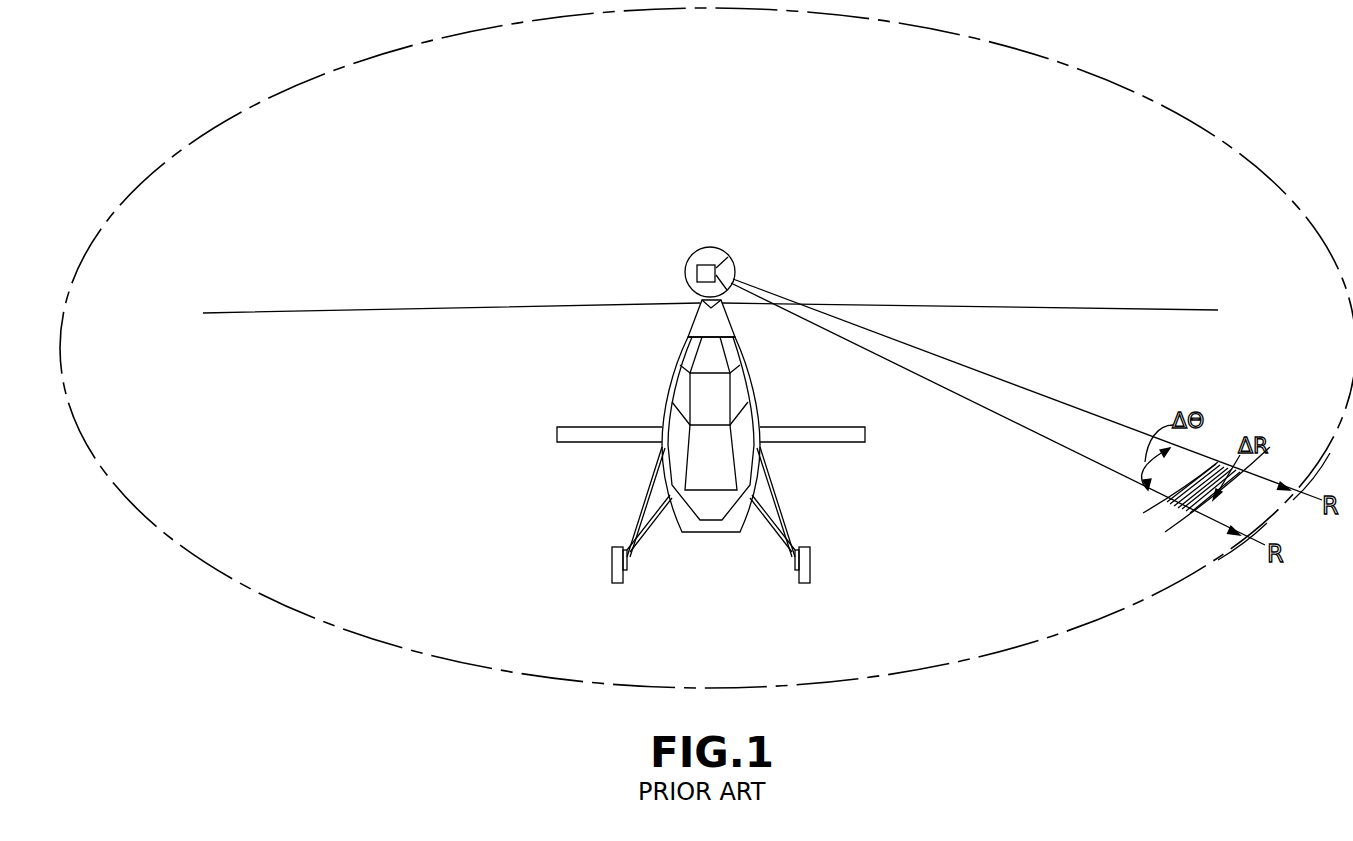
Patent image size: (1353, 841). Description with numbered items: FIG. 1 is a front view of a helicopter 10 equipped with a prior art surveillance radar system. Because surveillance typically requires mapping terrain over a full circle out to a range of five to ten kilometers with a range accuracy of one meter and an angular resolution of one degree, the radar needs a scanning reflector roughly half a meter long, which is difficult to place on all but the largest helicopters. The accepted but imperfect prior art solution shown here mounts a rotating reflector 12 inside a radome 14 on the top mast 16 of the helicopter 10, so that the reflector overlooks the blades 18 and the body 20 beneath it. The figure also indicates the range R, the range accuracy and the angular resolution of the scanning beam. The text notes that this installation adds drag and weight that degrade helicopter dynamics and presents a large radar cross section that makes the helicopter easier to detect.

The helicopter 10 is at (710, 404).
The rotating reflector 12 is at (707, 255).
The radome 14 is at (737, 250).
The top mast 16 is at (727, 323).
The blades 18 is at (1043, 307).
The body 20 is at (760, 403).